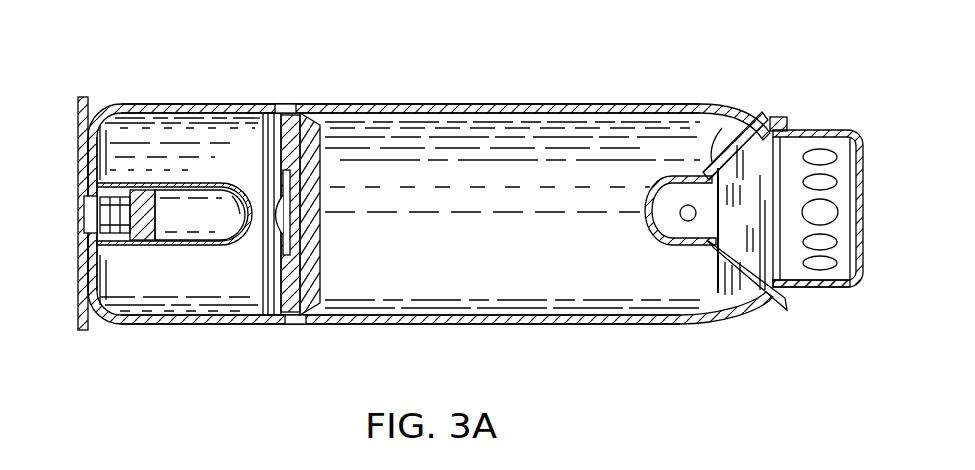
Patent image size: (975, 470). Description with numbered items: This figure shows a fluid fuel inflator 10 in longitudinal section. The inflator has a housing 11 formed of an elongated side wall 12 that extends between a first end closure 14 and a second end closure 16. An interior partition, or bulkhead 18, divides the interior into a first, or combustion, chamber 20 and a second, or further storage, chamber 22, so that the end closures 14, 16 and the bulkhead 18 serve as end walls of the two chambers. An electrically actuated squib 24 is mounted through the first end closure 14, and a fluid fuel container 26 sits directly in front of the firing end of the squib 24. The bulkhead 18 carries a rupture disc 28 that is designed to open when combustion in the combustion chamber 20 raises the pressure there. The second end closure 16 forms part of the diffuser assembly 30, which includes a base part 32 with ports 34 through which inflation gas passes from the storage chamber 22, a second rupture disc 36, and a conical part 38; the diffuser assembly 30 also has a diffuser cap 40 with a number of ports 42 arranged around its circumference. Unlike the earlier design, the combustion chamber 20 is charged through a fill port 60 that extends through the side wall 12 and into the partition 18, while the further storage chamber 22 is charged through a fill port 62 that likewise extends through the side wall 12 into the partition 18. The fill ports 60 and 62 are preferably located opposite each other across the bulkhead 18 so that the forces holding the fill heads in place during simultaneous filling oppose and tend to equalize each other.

The elongated inflator 10 is at (373, 100).
The housing 11 is at (443, 107).
The elongated side wall 12 is at (518, 110).
The first end closure 14 is at (83, 291).
The second end closure 16 is at (777, 117).
The bulkhead 18 is at (300, 276).
The combustion chamber 20 is at (185, 125).
The further storage chamber 22 is at (480, 128).
The squib 24 is at (130, 195).
The fluid fuel container 26 is at (199, 243).
The rupture disc 28 is at (298, 217).
The diffuser assembly 30 is at (793, 136).
The base part 32 is at (653, 187).
The ports 34 is at (710, 173).
The second rupture disc 36 is at (703, 228).
The conical part 38 is at (742, 281).
The diffuser cap 40 is at (832, 290).
The ports 42 is at (823, 215).
The fill port 60 is at (287, 104).
The fill port 62 is at (297, 322).